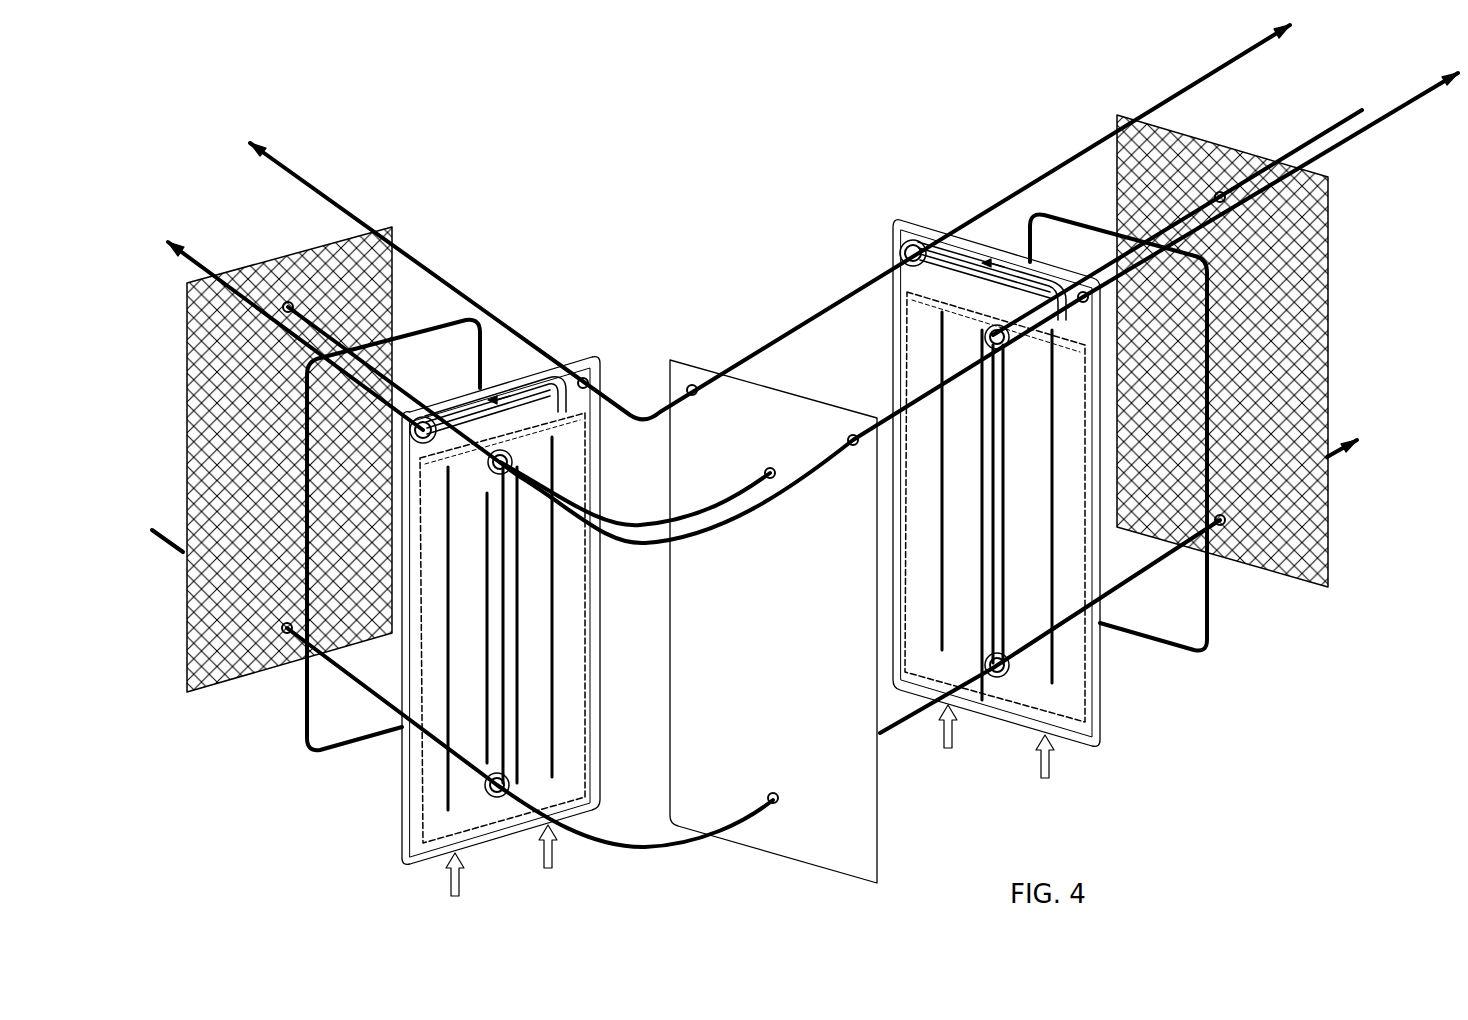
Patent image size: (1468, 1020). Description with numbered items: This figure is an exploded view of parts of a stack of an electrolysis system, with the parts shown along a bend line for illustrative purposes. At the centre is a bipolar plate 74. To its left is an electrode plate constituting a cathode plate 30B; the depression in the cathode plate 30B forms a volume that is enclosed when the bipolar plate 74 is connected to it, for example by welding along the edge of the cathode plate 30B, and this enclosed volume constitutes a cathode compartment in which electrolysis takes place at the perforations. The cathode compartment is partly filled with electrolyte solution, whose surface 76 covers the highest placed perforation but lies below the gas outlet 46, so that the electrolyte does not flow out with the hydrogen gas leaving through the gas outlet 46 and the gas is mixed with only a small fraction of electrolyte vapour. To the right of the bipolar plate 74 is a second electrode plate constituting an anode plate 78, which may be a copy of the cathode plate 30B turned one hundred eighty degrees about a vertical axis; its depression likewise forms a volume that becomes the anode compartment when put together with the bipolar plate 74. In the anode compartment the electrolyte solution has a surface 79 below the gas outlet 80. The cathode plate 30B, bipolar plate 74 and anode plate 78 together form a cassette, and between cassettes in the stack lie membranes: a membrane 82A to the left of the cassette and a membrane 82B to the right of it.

The cathode plate 30B is at (522, 420).
The gas outlet 46 is at (437, 418).
The bipolar plate 74 is at (775, 382).
The surface of electrolyte solution 76 is at (598, 366).
The anode plate 78 is at (998, 250).
The surface of electrolyte solution 79 is at (973, 297).
The gas outlet 80 is at (897, 250).
The membrane 82A is at (293, 250).
The membrane 82B is at (1217, 143).